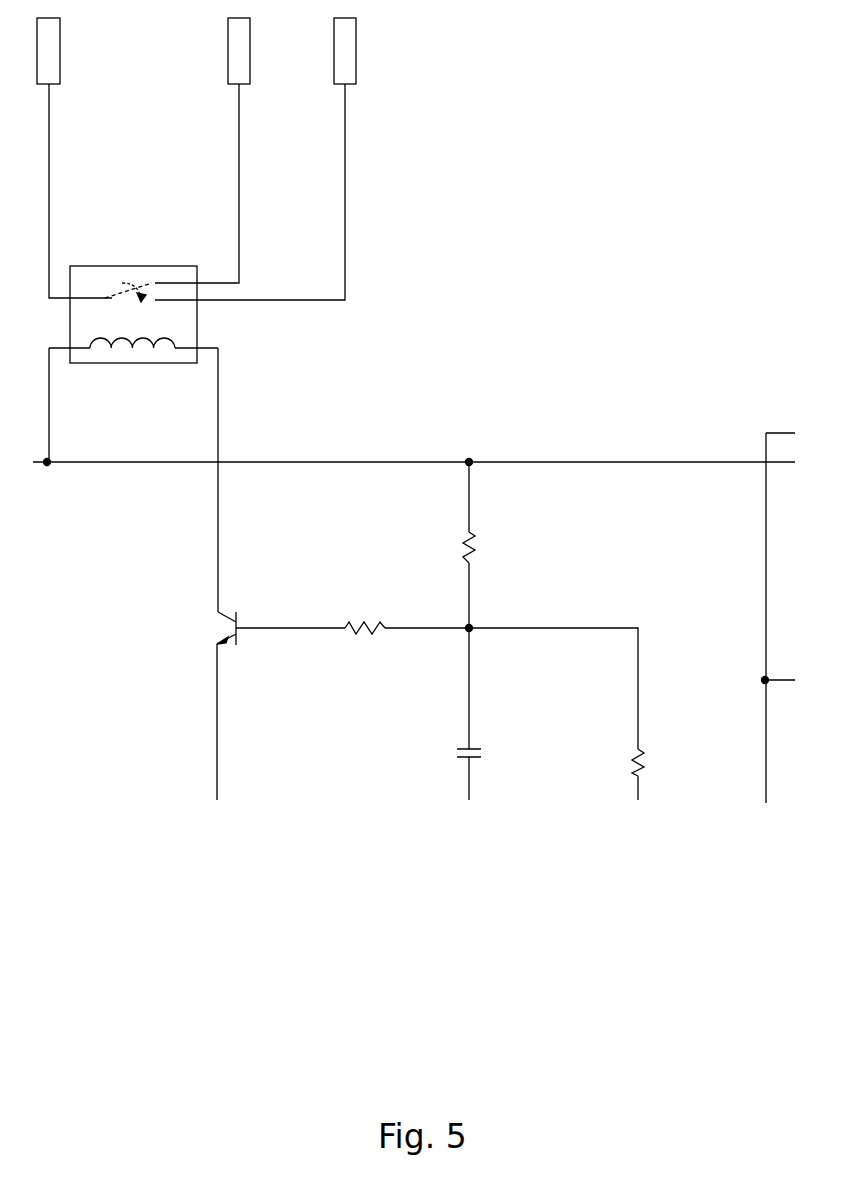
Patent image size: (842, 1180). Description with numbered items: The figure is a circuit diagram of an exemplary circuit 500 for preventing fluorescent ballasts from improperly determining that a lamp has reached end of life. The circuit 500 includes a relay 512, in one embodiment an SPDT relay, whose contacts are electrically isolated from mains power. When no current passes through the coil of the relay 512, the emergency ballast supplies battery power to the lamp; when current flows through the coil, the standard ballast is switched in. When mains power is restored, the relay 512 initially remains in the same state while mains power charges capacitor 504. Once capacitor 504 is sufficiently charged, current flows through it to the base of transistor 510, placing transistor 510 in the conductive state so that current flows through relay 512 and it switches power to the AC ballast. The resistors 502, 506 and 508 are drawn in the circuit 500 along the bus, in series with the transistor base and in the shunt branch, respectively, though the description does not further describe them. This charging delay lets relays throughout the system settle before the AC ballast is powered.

The circuit 500 is at (164, 843).
The resistor 502 is at (446, 538).
The capacitor 504 is at (454, 744).
The resistor 506 is at (625, 762).
The resistor 508 is at (362, 636).
The transistor 510 is at (208, 624).
The relay 512 is at (203, 341).